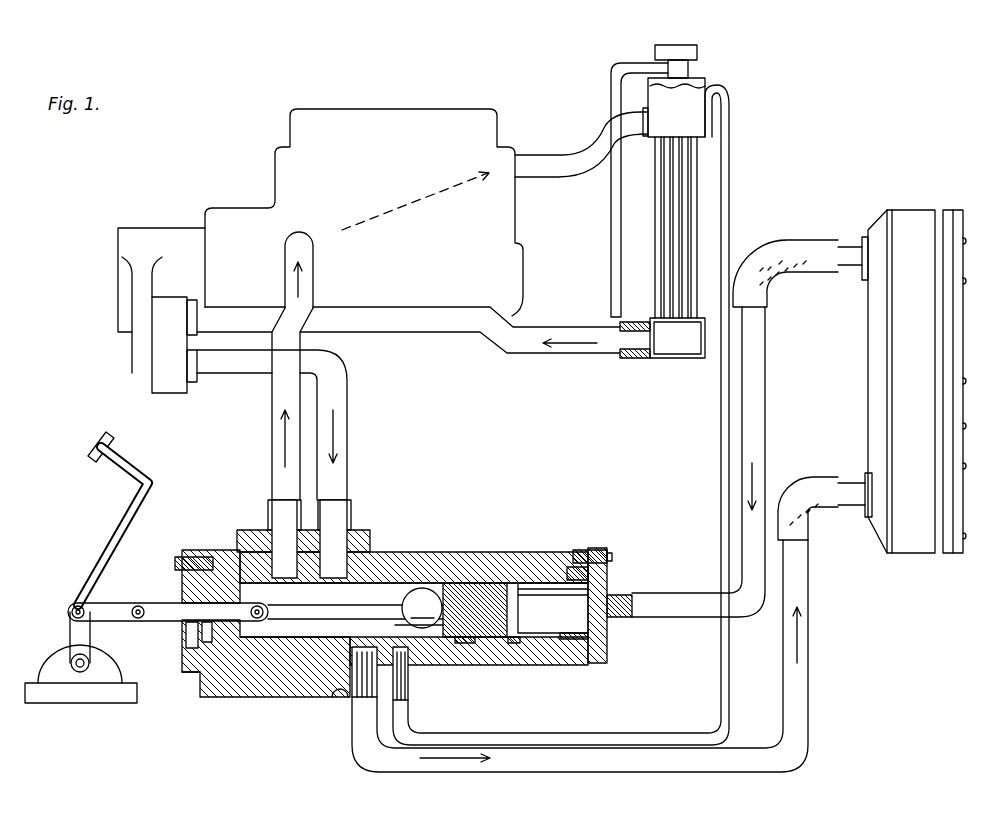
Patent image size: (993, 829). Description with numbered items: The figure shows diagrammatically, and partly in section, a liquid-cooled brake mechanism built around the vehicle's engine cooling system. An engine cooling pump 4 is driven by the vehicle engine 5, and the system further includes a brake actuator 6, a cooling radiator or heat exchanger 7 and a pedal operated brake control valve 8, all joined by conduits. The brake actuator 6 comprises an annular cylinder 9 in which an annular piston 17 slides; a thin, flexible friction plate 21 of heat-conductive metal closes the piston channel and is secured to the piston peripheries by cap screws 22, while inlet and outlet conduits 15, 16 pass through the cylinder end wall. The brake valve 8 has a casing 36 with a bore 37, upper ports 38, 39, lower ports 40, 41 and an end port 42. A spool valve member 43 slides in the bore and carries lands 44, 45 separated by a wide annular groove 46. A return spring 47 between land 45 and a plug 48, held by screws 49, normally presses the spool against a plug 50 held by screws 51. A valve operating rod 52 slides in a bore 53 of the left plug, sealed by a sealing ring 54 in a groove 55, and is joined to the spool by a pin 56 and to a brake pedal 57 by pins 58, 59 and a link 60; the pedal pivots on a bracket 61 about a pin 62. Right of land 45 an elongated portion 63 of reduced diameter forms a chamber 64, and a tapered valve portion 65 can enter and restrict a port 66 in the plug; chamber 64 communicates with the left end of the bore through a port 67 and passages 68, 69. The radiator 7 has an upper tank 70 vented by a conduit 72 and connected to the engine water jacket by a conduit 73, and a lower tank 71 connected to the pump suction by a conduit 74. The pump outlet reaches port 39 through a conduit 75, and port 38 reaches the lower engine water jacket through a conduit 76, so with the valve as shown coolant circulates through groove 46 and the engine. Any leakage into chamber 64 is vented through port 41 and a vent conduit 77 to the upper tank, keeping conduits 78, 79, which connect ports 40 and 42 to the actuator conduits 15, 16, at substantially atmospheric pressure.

The engine cooling pump 4 is at (168, 395).
The vehicle engine 5 is at (410, 108).
The brake actuator 6 is at (914, 208).
The cooling radiator 7 is at (712, 73).
The brake control valve 8 is at (401, 615).
The annular cylinder 9 is at (870, 228).
The inlet conduit 15 is at (852, 497).
The outlet conduit 16 is at (848, 272).
The annular piston 17 is at (948, 210).
The friction plate 21 is at (960, 262).
The cap screws 22 is at (955, 385).
The casing 36 is at (562, 562).
The bore 37 is at (455, 560).
The port 38 is at (252, 530).
The port 39 is at (347, 545).
The port 40 is at (352, 680).
The port 41 is at (420, 668).
The port 42 is at (612, 612).
The spool valve member 43 is at (518, 652).
The land 44 is at (232, 552).
The land 45 is at (375, 565).
The annular groove 46 is at (320, 648).
The return spring 47 is at (487, 585).
The plug 48 is at (585, 558).
The screws 49 is at (610, 560).
The plug 50 is at (186, 640).
The screws 51 is at (183, 565).
The valve operating rod 52 is at (178, 604).
The bore 53 is at (200, 645).
The sealing ring 54 is at (230, 640).
The groove 55 is at (205, 645).
The pin 56 is at (270, 612).
The brake pedal 57 is at (140, 462).
The pin 58 is at (138, 606).
The pin 59 is at (68, 612).
The link 60 is at (78, 605).
The bracket 61 is at (50, 700).
The pin 62 is at (80, 672).
The elongated portion 63 is at (468, 645).
The chamber 64 is at (513, 645).
The tapered valve portion 65 is at (500, 622).
The port 66 is at (573, 642).
The port 67 is at (422, 608).
The passage 68 is at (390, 642).
The passage 69 is at (278, 664).
The upper tank 70 is at (702, 118).
The lower tank 71 is at (688, 354).
The conduit 72 is at (612, 237).
The conduit 73 is at (600, 128).
The conduit 74 is at (432, 309).
The conduit 75 is at (340, 411).
The conduit 76 is at (272, 440).
The vent conduit 77 is at (722, 240).
The conduit 78 is at (808, 704).
The conduit 79 is at (755, 432).